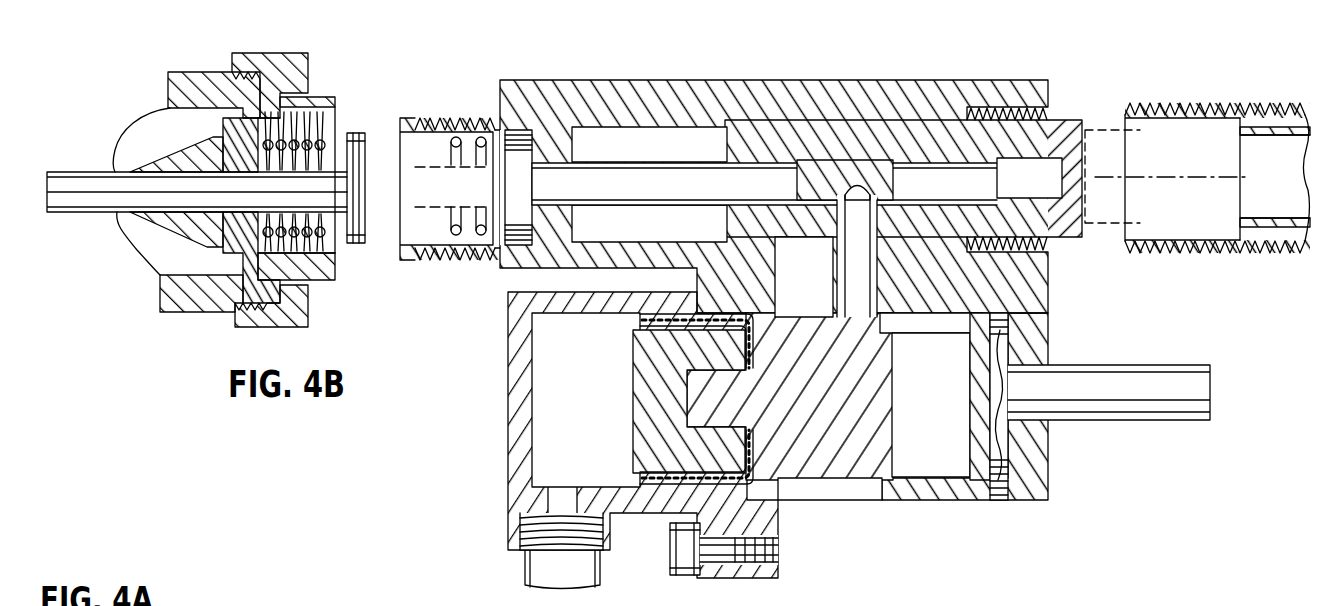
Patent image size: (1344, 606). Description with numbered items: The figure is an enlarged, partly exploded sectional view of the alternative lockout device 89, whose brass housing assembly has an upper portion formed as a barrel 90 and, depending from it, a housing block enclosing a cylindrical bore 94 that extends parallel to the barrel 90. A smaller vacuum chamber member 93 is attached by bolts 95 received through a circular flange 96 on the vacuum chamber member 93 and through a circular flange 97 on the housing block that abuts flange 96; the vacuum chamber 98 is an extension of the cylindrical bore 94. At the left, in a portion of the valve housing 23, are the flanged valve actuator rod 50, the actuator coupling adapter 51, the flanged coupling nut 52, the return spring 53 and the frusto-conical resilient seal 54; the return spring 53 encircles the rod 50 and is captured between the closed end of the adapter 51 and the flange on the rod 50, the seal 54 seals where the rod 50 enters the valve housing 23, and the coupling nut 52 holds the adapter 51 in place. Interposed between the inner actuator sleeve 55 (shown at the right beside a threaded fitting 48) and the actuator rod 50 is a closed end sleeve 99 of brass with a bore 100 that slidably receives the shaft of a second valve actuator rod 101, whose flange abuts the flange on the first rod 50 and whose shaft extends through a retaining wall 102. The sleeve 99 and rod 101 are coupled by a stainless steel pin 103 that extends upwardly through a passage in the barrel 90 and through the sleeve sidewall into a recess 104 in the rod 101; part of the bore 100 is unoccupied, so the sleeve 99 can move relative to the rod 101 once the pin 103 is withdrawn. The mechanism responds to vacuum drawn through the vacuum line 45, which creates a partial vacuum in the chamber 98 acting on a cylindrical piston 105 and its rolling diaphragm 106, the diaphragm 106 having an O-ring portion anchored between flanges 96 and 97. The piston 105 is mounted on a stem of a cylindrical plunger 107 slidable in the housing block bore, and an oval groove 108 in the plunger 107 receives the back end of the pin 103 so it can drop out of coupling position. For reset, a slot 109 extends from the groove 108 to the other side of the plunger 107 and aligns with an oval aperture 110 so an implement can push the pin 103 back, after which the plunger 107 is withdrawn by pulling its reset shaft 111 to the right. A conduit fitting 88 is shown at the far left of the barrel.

In FIG. 4B, the valve housing 23 is at (200, 72).
In FIG. 4B, the flanged coupling nut 52 is at (295, 52).
In FIG. 4B, the actuator coupling adapter 51 is at (320, 95).
In FIG. 4B, the return spring 53 is at (312, 147).
In FIG. 4B, the frusto-conical resilient seal 54 is at (170, 150).
In FIG. 4B, the valve actuator rod 50 is at (78, 205).
In FIG. 4A, the conduit fitting 88 is at (422, 362).
In FIG. 4A, the lockout device 89 is at (736, 72).
In FIG. 4A, the barrel 90 is at (580, 82).
In FIG. 4A, the vacuum chamber member 93 is at (508, 437).
In FIG. 4A, the closed end sleeve 99 is at (1068, 118).
In FIG. 4A, the threaded fitting 48 is at (1206, 102).
In FIG. 4A, the inner actuator sleeve 55 is at (1240, 147).
In FIG. 4A, the retaining wall 102 is at (578, 136).
In FIG. 4A, the second valve actuator rod 101 is at (642, 188).
In FIG. 4A, the bore 100 is at (1052, 191).
In FIG. 4A, the stainless steel pin 103 is at (838, 292).
In FIG. 4A, the recess 104 is at (857, 196).
In FIG. 4A, the vacuum chamber 98 is at (586, 346).
In FIG. 4A, the cylindrical piston 105 is at (633, 383).
In FIG. 4A, the diaphragm 106 is at (640, 479).
In FIG. 4A, the oval groove 108 is at (985, 325).
In FIG. 4A, the slot 109 is at (942, 421).
In FIG. 4A, the oval aperture 110 is at (874, 500).
In FIG. 4A, the cylindrical plunger 107 is at (1007, 480).
In FIG. 4A, the cylindrical bore 94 is at (993, 353).
In FIG. 4A, the reset shaft 111 is at (1152, 405).
In FIG. 4A, the vacuum line 45 is at (522, 572).
In FIG. 4A, the bolts 95 is at (670, 558).
In FIG. 4A, the circular flange 96 is at (718, 580).
In FIG. 4A, the circular flange 97 is at (760, 580).